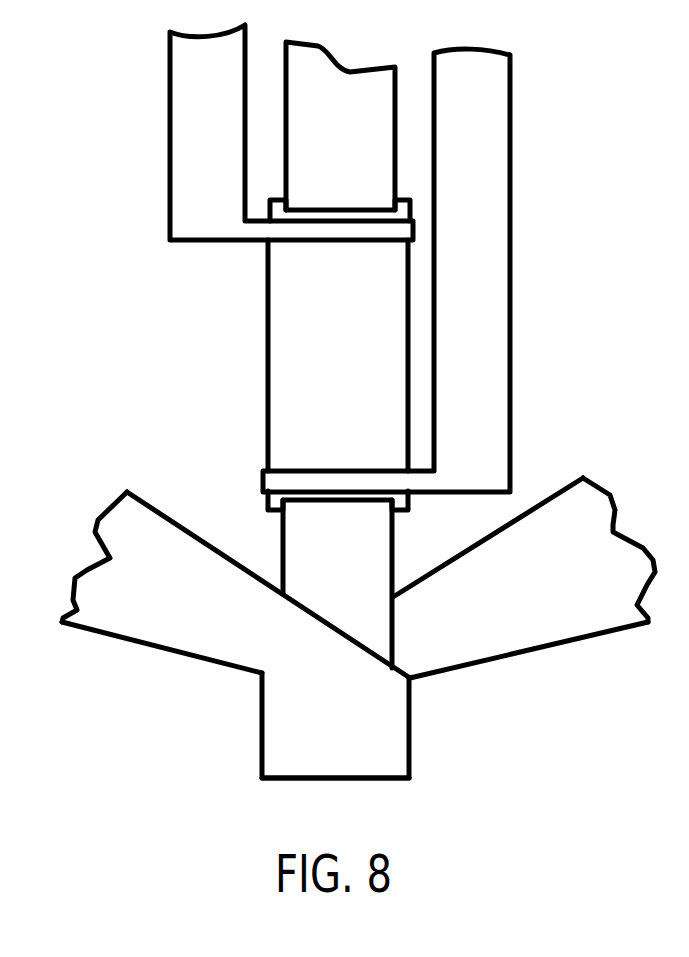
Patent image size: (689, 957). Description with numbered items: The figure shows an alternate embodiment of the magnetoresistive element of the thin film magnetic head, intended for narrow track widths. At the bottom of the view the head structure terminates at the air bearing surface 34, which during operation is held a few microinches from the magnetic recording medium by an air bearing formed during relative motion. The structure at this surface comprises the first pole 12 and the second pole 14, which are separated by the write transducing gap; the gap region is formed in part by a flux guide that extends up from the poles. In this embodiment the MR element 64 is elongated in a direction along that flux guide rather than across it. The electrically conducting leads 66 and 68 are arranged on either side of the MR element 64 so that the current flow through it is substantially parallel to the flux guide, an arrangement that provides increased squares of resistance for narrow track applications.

The first pole 12 is at (455, 640).
The second pole 14 is at (260, 727).
The air bearing surface 34 is at (382, 778).
The MR element 64 is at (302, 343).
The electrically conducting lead 66 is at (193, 125).
The electrically conducting lead 68 is at (485, 157).